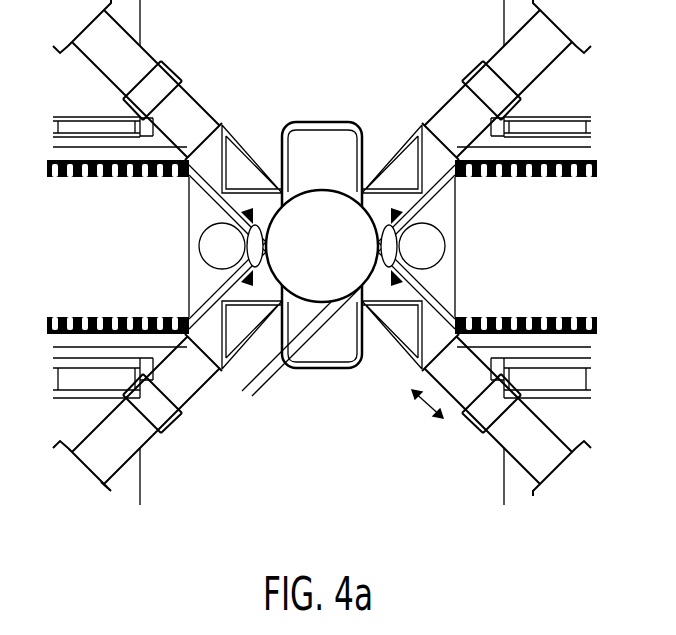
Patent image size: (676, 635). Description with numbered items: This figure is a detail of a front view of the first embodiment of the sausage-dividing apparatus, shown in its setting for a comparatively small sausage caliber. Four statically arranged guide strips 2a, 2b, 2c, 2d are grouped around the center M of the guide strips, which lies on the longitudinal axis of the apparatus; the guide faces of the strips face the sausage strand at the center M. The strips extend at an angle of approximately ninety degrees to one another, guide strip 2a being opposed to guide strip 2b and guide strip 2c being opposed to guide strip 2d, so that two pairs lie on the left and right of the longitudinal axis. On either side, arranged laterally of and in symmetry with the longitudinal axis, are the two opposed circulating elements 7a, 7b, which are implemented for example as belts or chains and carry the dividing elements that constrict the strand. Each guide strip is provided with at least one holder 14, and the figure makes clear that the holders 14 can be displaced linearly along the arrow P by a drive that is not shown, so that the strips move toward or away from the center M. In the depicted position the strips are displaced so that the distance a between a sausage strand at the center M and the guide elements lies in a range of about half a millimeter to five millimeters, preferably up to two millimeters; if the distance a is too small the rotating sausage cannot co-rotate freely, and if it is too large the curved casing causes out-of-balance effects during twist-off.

The guide strip 2a is at (243, 145).
The guide strip 2b is at (235, 348).
The guide strip 2c is at (397, 144).
The guide strip 2d is at (397, 343).
The circulating element 7a is at (125, 259).
The circulating element 7b is at (535, 259).
The holder 14 is at (194, 396).
The center of the guide strips M is at (317, 251).
The distance a is at (236, 381).
The arrow P is at (423, 410).